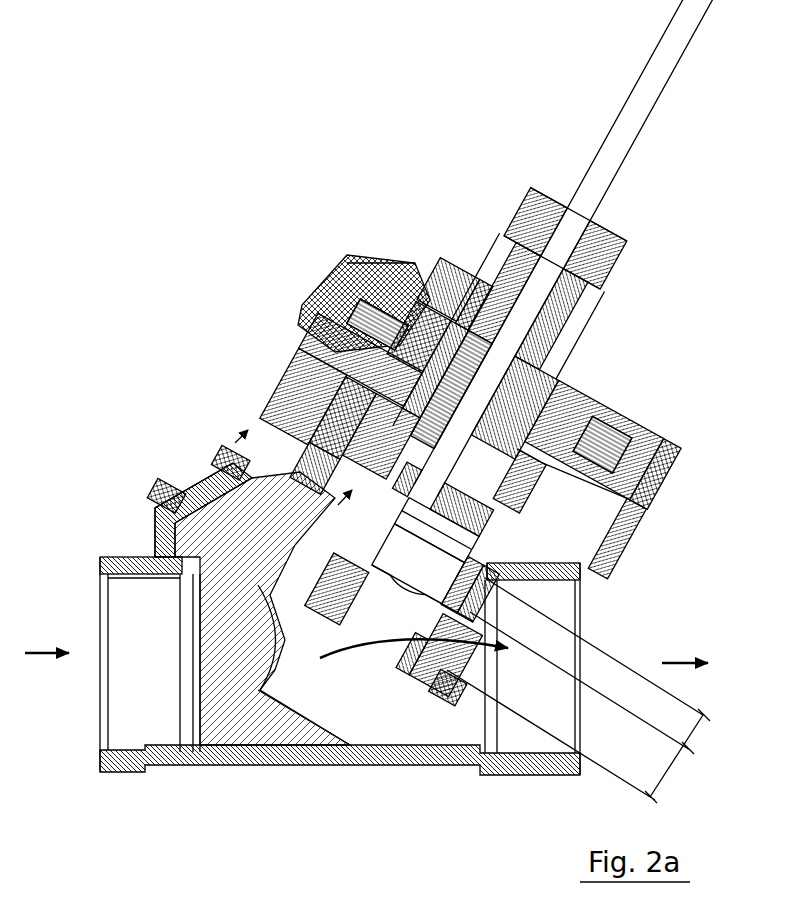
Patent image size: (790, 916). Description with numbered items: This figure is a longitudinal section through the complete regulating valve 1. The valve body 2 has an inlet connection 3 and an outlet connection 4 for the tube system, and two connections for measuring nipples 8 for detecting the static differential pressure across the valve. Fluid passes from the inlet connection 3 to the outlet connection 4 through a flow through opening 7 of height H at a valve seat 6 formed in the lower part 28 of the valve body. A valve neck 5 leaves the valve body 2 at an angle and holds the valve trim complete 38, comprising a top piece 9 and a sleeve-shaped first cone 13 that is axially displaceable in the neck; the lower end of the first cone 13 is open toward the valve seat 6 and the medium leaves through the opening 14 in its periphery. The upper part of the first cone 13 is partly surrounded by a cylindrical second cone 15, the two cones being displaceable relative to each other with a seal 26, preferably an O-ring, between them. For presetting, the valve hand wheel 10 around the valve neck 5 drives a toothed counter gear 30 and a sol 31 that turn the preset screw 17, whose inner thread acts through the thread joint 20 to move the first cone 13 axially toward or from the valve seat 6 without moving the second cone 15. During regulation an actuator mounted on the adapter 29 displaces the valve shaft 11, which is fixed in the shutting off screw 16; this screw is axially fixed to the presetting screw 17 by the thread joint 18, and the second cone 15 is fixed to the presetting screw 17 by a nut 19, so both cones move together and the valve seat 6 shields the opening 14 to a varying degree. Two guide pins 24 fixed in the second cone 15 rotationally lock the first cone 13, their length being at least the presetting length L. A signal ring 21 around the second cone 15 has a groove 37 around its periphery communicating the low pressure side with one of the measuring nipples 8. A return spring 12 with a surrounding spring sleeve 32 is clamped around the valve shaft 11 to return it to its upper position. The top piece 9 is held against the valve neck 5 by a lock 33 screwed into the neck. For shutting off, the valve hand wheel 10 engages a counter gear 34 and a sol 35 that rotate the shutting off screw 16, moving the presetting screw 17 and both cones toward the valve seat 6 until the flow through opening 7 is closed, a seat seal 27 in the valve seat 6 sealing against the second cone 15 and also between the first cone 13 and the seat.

The complete regulating valve 1 is at (390, 417).
The valve body 2 is at (168, 547).
The inlet connection 3 is at (100, 753).
The outlet connection 4 is at (547, 776).
The valve neck 5 is at (381, 460).
The valve seat 6 is at (423, 667).
The flow through opening 7 is at (450, 647).
The connections for measuring nipples 8 is at (230, 465).
The top piece 9 is at (522, 483).
The valve hand wheel 10 is at (655, 447).
The valve shaft 11 is at (655, 117).
The return spring 12 is at (555, 288).
The first cone 13 is at (433, 538).
The opening of the first cone 14 is at (347, 603).
The second cone 15 is at (335, 478).
The shutting off screw 16 is at (440, 375).
The presetting screw 17 is at (300, 350).
The thread joint 18 is at (355, 268).
The nut 19 is at (355, 478).
The thread joint 20 is at (437, 502).
The signal ring 21 is at (320, 470).
The guide pins 24 is at (378, 570).
The seal 26 is at (463, 562).
The seat seal 27 is at (421, 665).
The lower part of the valve body 28 is at (447, 690).
The adapter 29 is at (618, 253).
The counter gear 30 is at (635, 437).
The sol 31 is at (530, 433).
The spring sleeve 32 is at (547, 332).
The lock for the top piece 33 is at (455, 300).
The counter gear 34 is at (348, 337).
The sol 35 is at (425, 345).
The groove 37 is at (478, 587).
The valve trim complete 38 is at (455, 338).